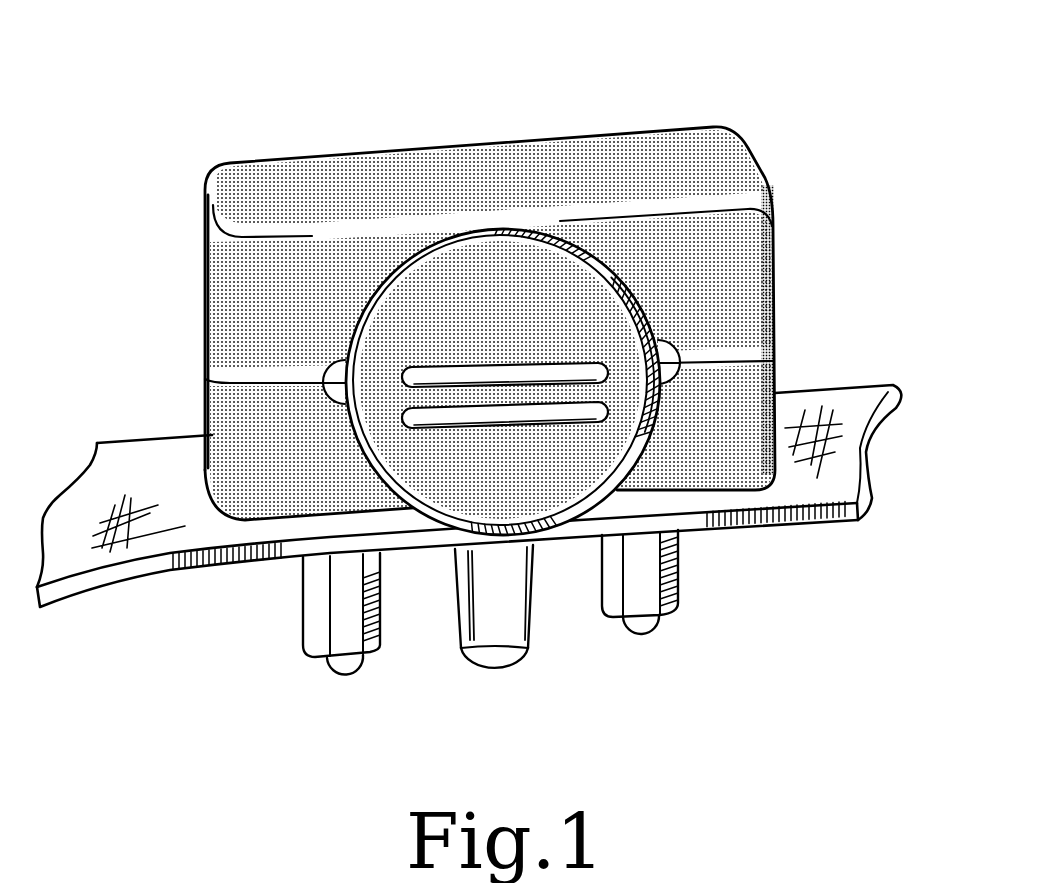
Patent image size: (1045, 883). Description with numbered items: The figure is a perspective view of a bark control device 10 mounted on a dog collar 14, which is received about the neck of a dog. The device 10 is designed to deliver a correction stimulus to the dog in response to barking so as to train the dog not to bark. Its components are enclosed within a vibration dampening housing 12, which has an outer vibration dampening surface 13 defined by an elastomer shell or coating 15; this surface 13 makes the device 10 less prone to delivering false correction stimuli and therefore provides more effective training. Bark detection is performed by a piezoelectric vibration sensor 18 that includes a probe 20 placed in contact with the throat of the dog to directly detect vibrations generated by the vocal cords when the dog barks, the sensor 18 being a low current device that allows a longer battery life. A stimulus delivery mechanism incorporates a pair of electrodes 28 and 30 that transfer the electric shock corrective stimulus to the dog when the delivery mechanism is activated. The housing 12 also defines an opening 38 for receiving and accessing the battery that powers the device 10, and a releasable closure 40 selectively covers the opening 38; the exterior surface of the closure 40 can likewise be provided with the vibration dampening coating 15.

The bark control device 10 is at (818, 106).
The vibration dampening housing 12 is at (675, 146).
The outer vibration dampening surface 13 is at (407, 153).
The dog collar 14 is at (842, 384).
The elastomer shell or coating 15 is at (250, 312).
The piezoelectric vibration sensor 18 is at (448, 625).
The probe 20 is at (533, 613).
The electrode 28 is at (303, 603).
The electrode 30 is at (678, 571).
The opening 38 is at (560, 248).
The releasable closure 40 is at (606, 305).